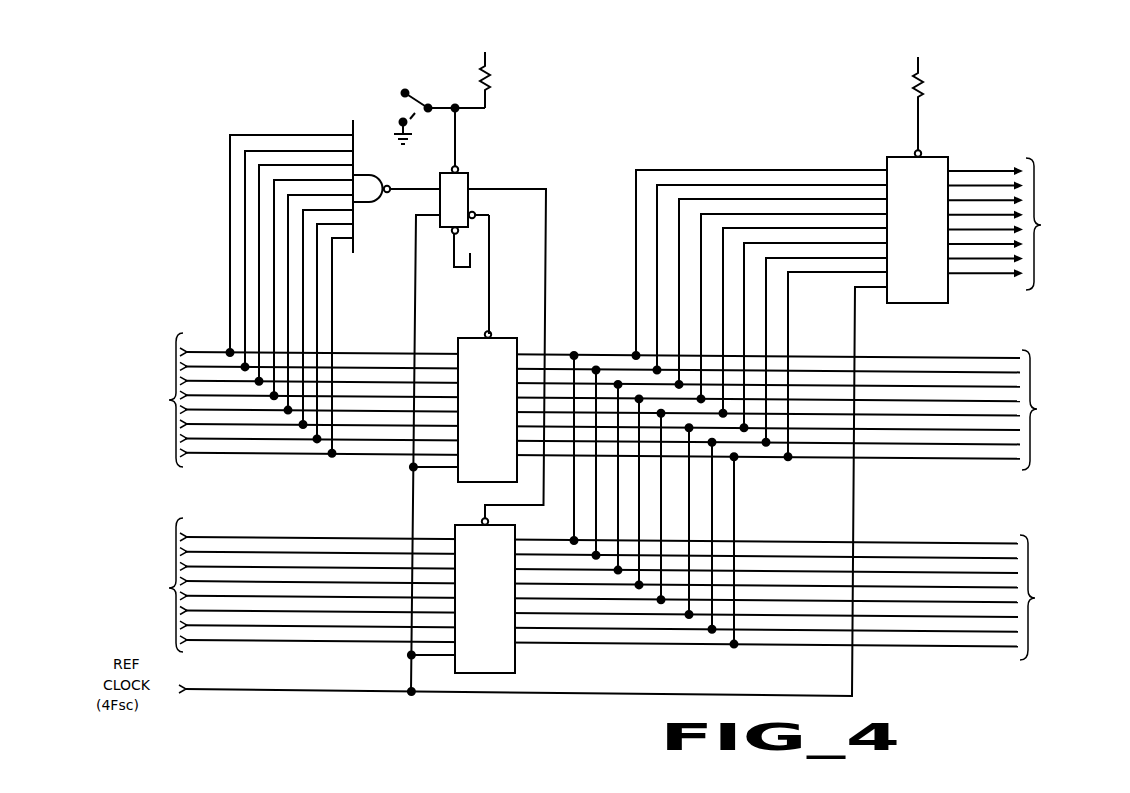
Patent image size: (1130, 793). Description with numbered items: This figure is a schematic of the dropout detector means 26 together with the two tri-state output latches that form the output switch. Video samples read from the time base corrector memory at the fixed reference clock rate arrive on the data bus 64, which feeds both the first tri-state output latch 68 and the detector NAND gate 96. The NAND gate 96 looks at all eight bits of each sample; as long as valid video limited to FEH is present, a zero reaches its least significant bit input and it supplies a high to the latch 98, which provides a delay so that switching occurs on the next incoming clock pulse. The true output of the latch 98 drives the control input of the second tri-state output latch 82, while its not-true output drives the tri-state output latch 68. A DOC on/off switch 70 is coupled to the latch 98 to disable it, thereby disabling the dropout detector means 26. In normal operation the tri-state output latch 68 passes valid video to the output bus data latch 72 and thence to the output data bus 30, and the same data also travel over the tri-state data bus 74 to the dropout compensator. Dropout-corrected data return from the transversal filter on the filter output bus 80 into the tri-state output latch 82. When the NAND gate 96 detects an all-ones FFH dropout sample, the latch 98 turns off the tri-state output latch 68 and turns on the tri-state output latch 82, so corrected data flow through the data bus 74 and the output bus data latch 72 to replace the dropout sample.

The dropout detector means 26 is at (405, 217).
The output data bus 30 is at (1020, 224).
The data bus 64 is at (589, 401).
The first tri-state output latch 68 is at (507, 334).
The DOC on/off switch 70 is at (437, 91).
The output bus data latch 72 is at (937, 157).
The tri-state data bus 74 is at (753, 503).
The filter output bus 80 is at (588, 589).
The second tri-state output latch 82 is at (516, 661).
The detector NAND gate 96 is at (381, 180).
The latch 98 is at (471, 181).